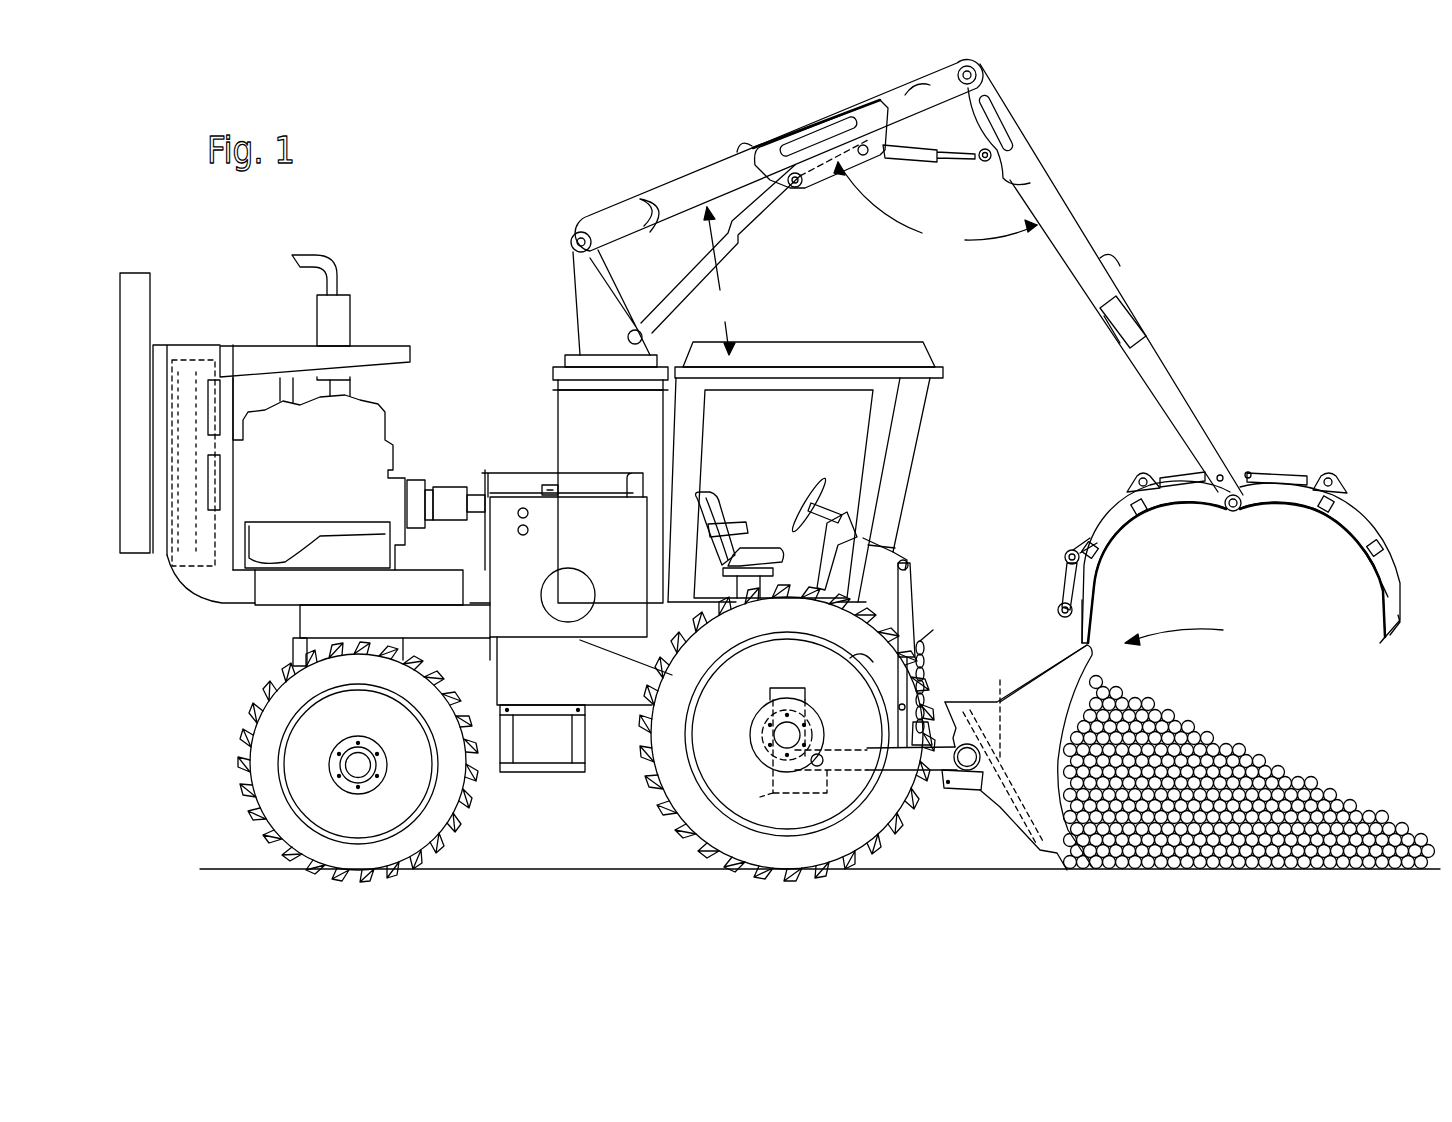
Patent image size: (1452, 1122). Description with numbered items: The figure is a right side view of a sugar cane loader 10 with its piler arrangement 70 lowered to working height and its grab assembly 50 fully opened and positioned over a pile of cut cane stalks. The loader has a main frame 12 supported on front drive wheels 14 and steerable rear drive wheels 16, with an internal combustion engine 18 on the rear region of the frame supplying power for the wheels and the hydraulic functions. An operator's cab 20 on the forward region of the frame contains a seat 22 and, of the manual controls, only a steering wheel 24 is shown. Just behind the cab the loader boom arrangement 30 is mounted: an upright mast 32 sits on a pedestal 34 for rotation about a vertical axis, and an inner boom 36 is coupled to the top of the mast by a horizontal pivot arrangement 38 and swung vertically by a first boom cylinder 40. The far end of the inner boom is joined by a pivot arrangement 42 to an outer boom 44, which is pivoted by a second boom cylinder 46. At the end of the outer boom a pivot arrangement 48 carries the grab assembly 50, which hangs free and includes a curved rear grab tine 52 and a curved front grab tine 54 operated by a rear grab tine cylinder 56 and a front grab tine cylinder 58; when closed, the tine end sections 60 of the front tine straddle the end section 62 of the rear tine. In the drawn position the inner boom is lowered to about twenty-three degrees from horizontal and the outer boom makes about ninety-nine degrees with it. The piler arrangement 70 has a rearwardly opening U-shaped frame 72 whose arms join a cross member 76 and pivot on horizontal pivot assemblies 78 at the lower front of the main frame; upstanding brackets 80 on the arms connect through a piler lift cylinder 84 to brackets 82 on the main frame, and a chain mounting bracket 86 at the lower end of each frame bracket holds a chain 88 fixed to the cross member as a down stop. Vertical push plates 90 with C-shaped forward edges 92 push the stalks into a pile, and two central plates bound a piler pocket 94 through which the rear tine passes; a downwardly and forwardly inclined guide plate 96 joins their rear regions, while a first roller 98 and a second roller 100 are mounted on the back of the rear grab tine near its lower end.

The sugar cane loader 10 is at (427, 232).
The main frame 12 is at (300, 615).
The front drive wheels 14 is at (652, 786).
The rear drive wheels 16 is at (465, 820).
The internal combustion engine 18 is at (306, 463).
The operator's cab 20 is at (888, 342).
The seat 22 is at (722, 497).
The steering wheel 24 is at (818, 482).
The loader boom arrangement 30 is at (740, 118).
The upright mast 32 is at (578, 300).
The pedestal 34 is at (558, 410).
The inner boom 36 is at (682, 182).
The horizontal pivot arrangement 38 is at (576, 236).
The first hydraulic boom cylinder 40 is at (737, 255).
The horizontal pivot arrangement 42 is at (985, 72).
The outer boom 44 is at (1077, 225).
The second hydraulic boom cylinder 46 is at (908, 162).
The horizontal pivot arrangement 48 is at (1236, 515).
The grab assembly 50 is at (1378, 455).
The rear grab tine 52 is at (1092, 520).
The front grab tine 54 is at (1390, 540).
The rear grab tine cylinder 56 is at (1175, 470).
The front grab tine cylinder 58 is at (1268, 470).
The tine end sections 60 is at (1398, 630).
The end section 62 is at (1086, 617).
The piler arrangement 70 is at (1192, 632).
The U-shaped frame 72 is at (938, 793).
The cross member 76 is at (975, 792).
The horizontal pivot assemblies 78 is at (827, 793).
The upstanding brackets 80 is at (897, 720).
The brackets 82 is at (908, 548).
The piler lift cylinder 84 is at (895, 666).
The chain mounting bracket 86 is at (915, 620).
The chain 88 is at (925, 662).
The push plates 90 is at (1009, 745).
The forward edges 92 is at (1110, 700).
The piler pocket 94 is at (1025, 683).
The guide plate 96 is at (1000, 673).
The first roller 98 is at (1062, 603).
The second roller 100 is at (1070, 550).